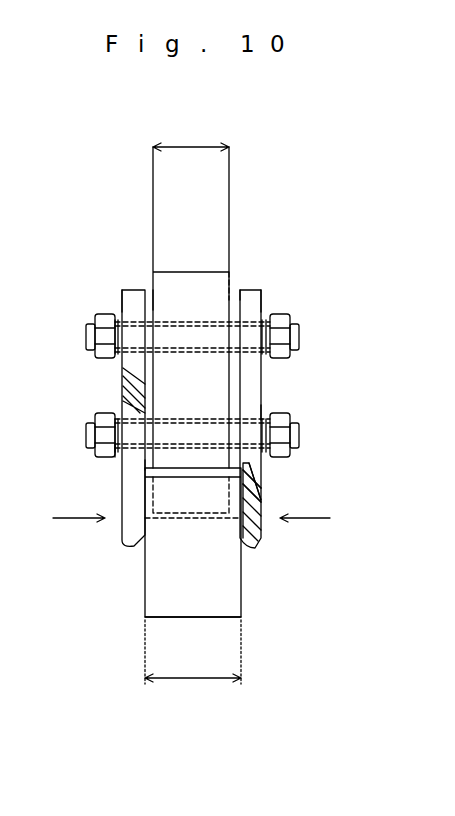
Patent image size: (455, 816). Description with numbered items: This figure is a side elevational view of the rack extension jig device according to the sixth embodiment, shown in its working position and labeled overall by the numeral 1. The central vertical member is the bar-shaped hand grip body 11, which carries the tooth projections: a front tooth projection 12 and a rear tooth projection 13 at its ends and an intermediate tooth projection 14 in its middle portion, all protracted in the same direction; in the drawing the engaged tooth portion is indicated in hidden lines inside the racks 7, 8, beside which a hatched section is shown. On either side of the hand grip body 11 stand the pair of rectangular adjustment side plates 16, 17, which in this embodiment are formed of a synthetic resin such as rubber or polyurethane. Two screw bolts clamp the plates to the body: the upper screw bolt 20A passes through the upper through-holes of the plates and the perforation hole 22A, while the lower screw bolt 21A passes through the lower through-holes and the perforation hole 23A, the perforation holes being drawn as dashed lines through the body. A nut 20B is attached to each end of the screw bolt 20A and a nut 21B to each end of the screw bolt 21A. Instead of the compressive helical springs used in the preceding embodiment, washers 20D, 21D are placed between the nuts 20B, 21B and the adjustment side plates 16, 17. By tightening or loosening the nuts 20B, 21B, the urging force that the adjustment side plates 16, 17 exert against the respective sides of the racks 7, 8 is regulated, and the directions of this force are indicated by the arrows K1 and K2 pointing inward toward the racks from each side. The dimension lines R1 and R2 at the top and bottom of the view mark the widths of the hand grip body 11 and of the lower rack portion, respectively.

The joint structure 1 is at (276, 270).
The rack 7 is at (230, 578).
The rack 8 is at (252, 604).
The hand grip body 11 is at (188, 272).
The front tooth projection 12 is at (217, 497).
The rear tooth projection 13 is at (335, 498).
The intermediate tooth projection 14 is at (314, 491).
The adjustment side plate 16 is at (121, 378).
The adjustment side plate 17 is at (253, 371).
The screw bolt 20A is at (152, 310).
The nut 20B is at (88, 334).
The washer 20D is at (120, 308).
The screw bolt 21A is at (150, 466).
The nut 21B is at (88, 441).
The washer 21D is at (264, 412).
The perforation hole 22A is at (204, 330).
The perforation hole 23A is at (227, 448).
The arrow K1 is at (71, 534).
The arrow K2 is at (311, 534).
The upper pipe width R1 is at (191, 136).
The lower pipe width R2 is at (193, 652).